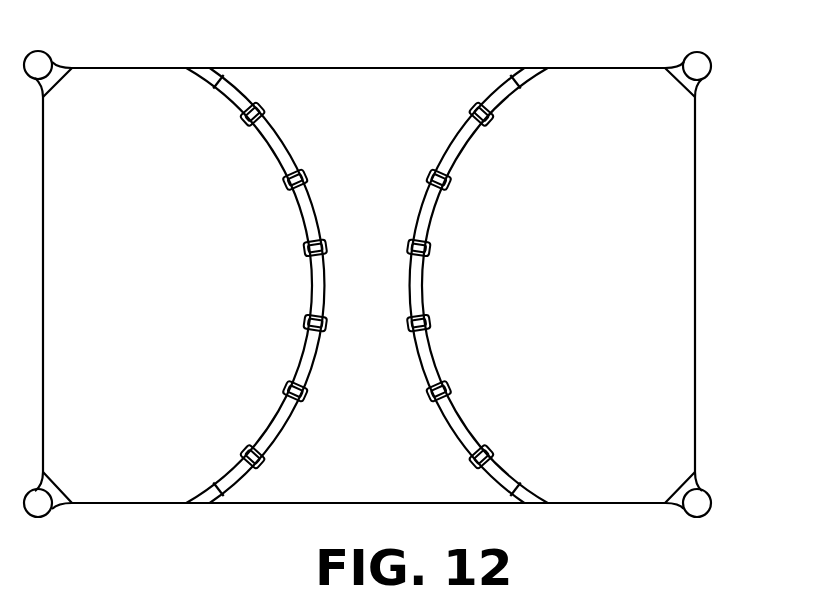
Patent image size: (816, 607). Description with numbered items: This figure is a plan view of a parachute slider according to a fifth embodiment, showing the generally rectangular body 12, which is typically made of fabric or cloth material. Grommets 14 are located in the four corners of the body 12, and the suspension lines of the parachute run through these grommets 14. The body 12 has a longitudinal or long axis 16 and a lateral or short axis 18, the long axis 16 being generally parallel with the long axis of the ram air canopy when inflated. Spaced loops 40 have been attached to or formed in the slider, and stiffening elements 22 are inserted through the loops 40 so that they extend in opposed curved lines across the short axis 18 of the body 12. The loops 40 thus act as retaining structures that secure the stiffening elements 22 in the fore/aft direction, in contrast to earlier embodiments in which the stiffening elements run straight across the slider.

The body 12 is at (610, 86).
The grommets 14 is at (710, 506).
The longitudinal axis 16 is at (283, 68).
The short axis 18 is at (696, 300).
The stiffening element 22 is at (441, 206).
The spaced loops 40 is at (480, 110).